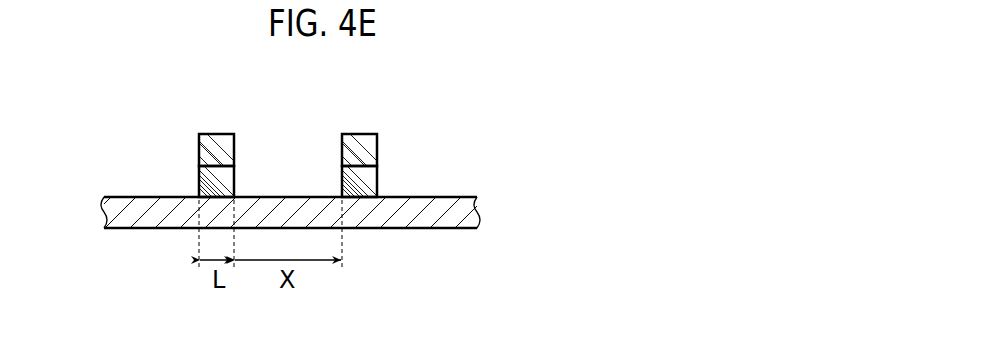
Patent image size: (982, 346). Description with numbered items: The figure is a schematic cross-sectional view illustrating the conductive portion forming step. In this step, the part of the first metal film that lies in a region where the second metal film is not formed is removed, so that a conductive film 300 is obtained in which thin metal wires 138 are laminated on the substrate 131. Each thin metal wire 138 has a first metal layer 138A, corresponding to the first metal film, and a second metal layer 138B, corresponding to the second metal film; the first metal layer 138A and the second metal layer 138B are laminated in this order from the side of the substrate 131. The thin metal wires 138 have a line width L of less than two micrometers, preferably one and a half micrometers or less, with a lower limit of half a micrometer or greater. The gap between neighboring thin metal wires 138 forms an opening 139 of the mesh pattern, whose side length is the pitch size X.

The substrate 131 is at (460, 212).
The thin metal wire 138 is at (232, 139).
The first metal layer 138A is at (218, 180).
The second metal layer 138B is at (218, 148).
The opening 139 is at (283, 162).
The conductive film 300 is at (485, 126).